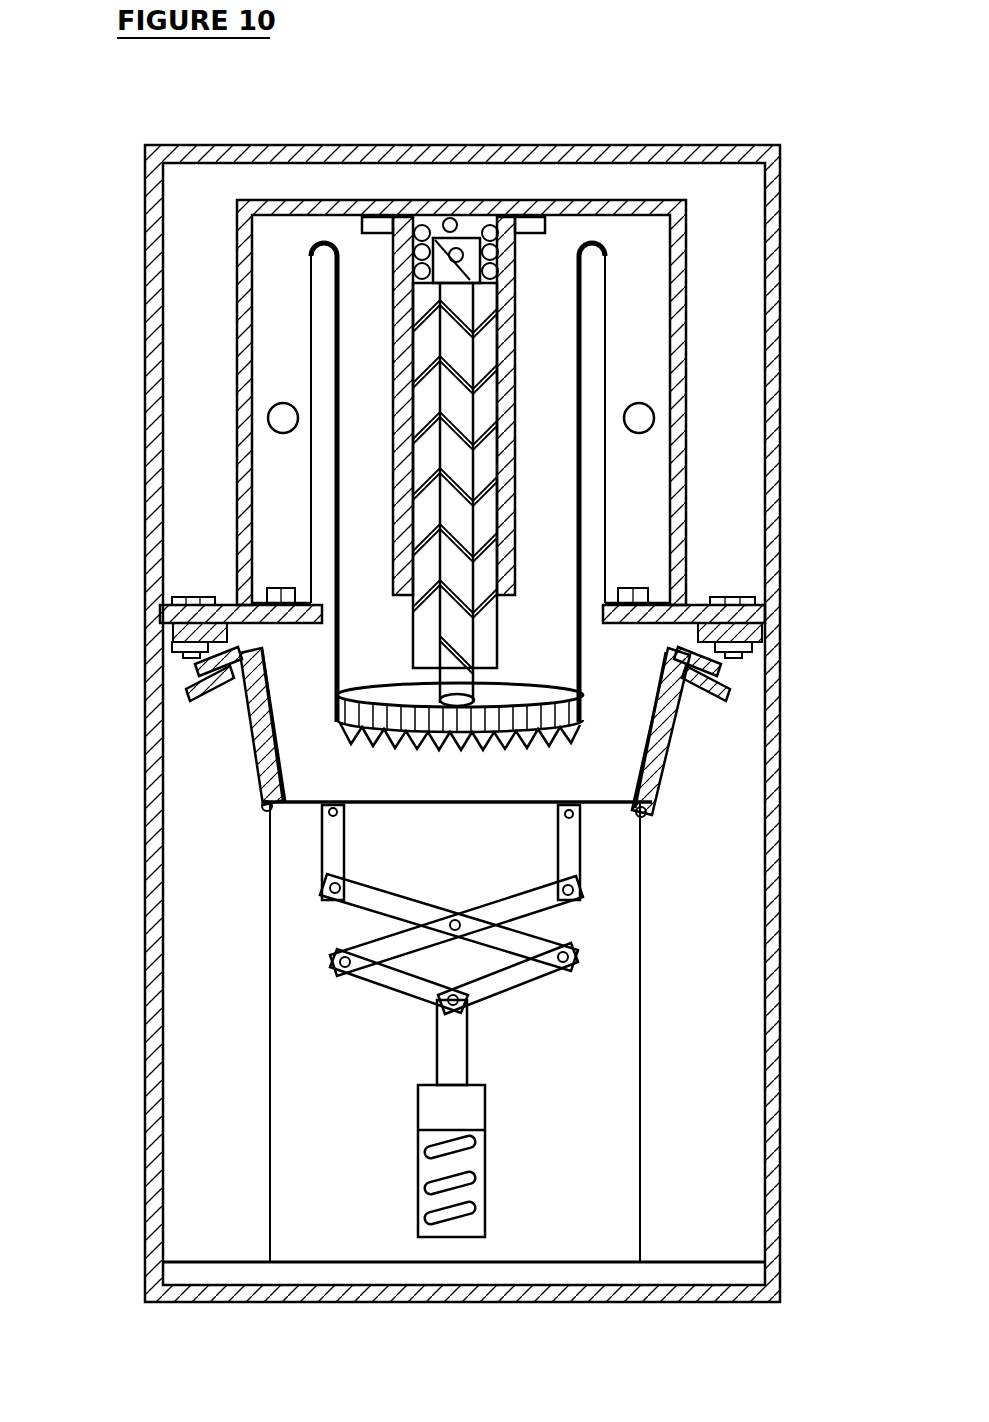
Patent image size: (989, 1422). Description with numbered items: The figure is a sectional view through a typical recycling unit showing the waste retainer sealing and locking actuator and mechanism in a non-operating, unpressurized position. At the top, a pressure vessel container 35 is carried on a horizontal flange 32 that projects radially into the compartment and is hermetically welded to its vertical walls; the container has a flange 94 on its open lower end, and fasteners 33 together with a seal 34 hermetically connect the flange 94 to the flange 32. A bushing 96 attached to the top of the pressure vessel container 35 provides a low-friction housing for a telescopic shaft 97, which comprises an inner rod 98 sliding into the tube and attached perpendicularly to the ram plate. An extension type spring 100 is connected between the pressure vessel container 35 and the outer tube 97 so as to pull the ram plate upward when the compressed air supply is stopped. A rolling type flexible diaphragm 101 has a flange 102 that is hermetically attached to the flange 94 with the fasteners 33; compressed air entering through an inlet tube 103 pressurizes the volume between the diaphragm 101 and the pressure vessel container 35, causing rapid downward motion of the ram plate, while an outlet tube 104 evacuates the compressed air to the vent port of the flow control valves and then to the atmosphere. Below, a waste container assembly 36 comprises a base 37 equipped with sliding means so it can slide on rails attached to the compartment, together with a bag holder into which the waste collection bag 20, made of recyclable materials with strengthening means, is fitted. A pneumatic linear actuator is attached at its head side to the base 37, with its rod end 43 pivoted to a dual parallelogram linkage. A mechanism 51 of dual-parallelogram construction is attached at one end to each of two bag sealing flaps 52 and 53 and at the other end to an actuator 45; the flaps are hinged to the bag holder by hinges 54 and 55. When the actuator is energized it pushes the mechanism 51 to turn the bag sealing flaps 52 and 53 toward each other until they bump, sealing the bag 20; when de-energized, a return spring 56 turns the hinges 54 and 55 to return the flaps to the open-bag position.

The waste collection bag 20 is at (678, 707).
The horizontal flange 32 is at (173, 630).
The fasteners 33 is at (187, 655).
The seal 34 is at (753, 645).
The pressure vessel container 35 is at (240, 300).
The waste container assembly 36 is at (328, 998).
The base 37 is at (297, 1210).
The rod end 43 is at (467, 1035).
The actuator 45 is at (435, 1102).
The mechanism 51 is at (528, 902).
The bag sealing flap 52 is at (722, 695).
The bag sealing flap 53 is at (232, 668).
The hinge 54 is at (260, 807).
The hinge 55 is at (648, 815).
The return spring 56 is at (465, 1188).
The flange 94 is at (755, 607).
The bushing 96 is at (393, 225).
The telescopic shaft 97 is at (423, 537).
The inner rod 98 is at (460, 542).
The extension type spring 100 is at (490, 217).
The rolling type flexible diaphragm 101 is at (311, 548).
The flange 102 is at (240, 652).
The inlet tube 103 is at (270, 419).
The outlet tube 104 is at (655, 420).